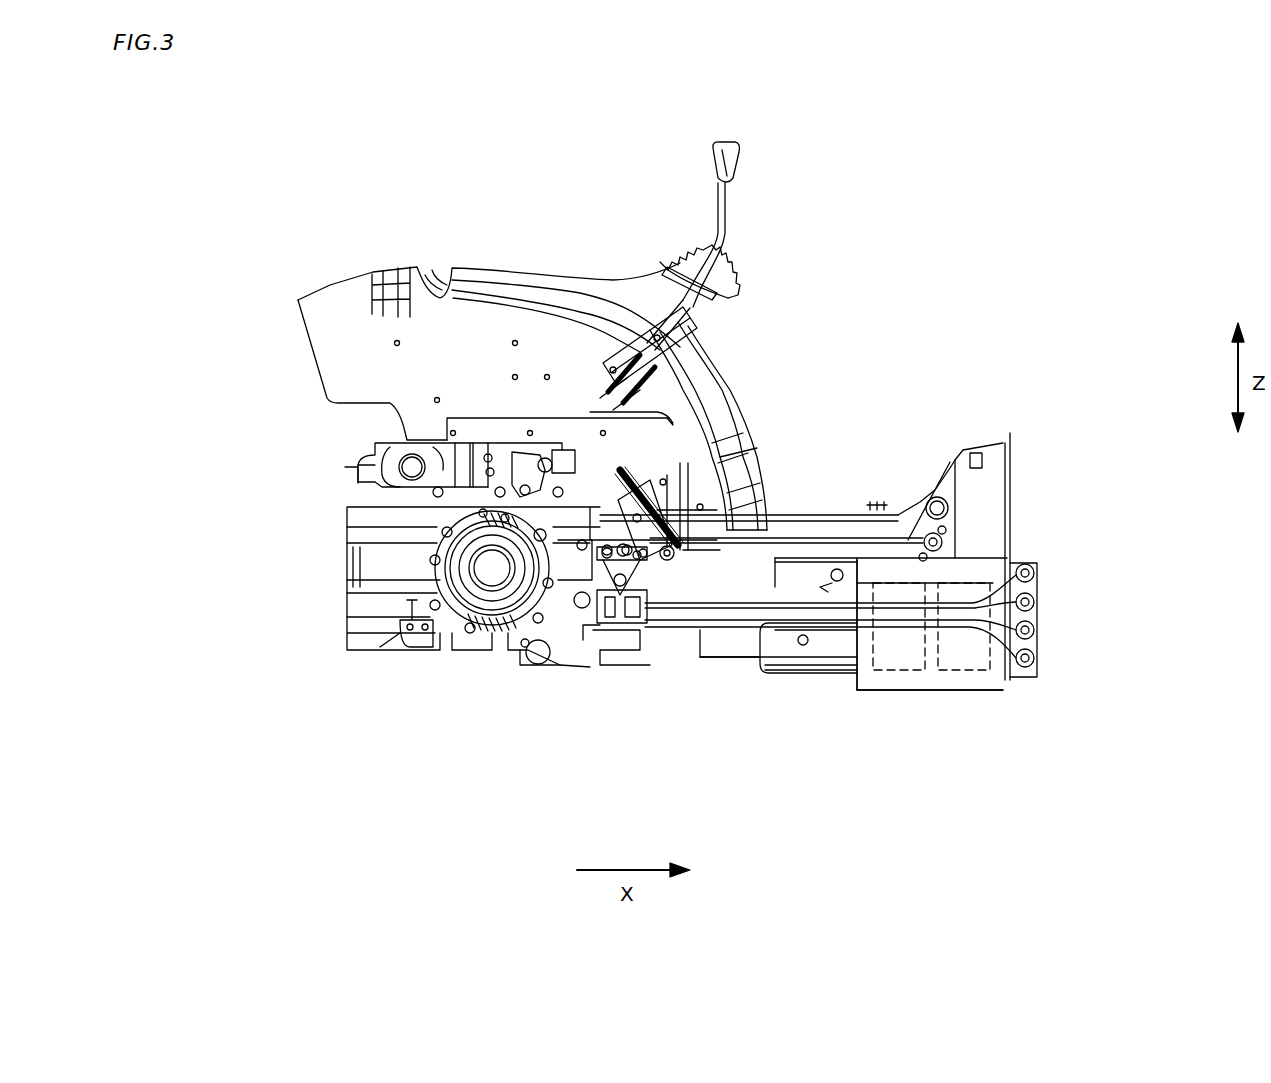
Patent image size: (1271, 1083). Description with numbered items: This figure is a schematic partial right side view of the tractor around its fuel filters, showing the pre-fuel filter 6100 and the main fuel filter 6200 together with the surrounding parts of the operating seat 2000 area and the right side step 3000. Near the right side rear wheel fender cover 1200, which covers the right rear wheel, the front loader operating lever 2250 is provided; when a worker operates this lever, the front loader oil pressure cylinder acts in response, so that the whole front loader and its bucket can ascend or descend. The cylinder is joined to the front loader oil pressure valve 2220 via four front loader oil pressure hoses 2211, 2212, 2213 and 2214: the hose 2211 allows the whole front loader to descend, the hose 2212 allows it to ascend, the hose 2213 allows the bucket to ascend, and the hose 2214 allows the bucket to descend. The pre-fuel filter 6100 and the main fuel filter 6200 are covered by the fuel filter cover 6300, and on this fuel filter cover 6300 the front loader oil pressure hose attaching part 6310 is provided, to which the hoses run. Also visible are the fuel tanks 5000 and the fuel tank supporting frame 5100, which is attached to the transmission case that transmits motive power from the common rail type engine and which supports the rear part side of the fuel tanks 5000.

The right side rear wheel fender cover 1200 is at (742, 405).
The operating seat 2000 is at (768, 296).
The front loader operating lever 2250 is at (712, 150).
The front loader oil pressure hose 2211 is at (1043, 572).
The front loader oil pressure hose 2212 is at (1043, 602).
The front loader oil pressure hose 2213 is at (1043, 628).
The front loader oil pressure hose 2214 is at (1043, 658).
The front loader oil pressure valve 2220 is at (618, 610).
The right side step 3000 is at (807, 675).
The fuel tanks 5000 is at (830, 515).
The fuel tank supporting frame 5100 is at (655, 497).
The pre-fuel filter 6100 is at (885, 680).
The main fuel filter 6200 is at (963, 673).
The fuel filter cover 6300 is at (930, 692).
The front loader oil pressure hose attaching part 6310 is at (1020, 680).